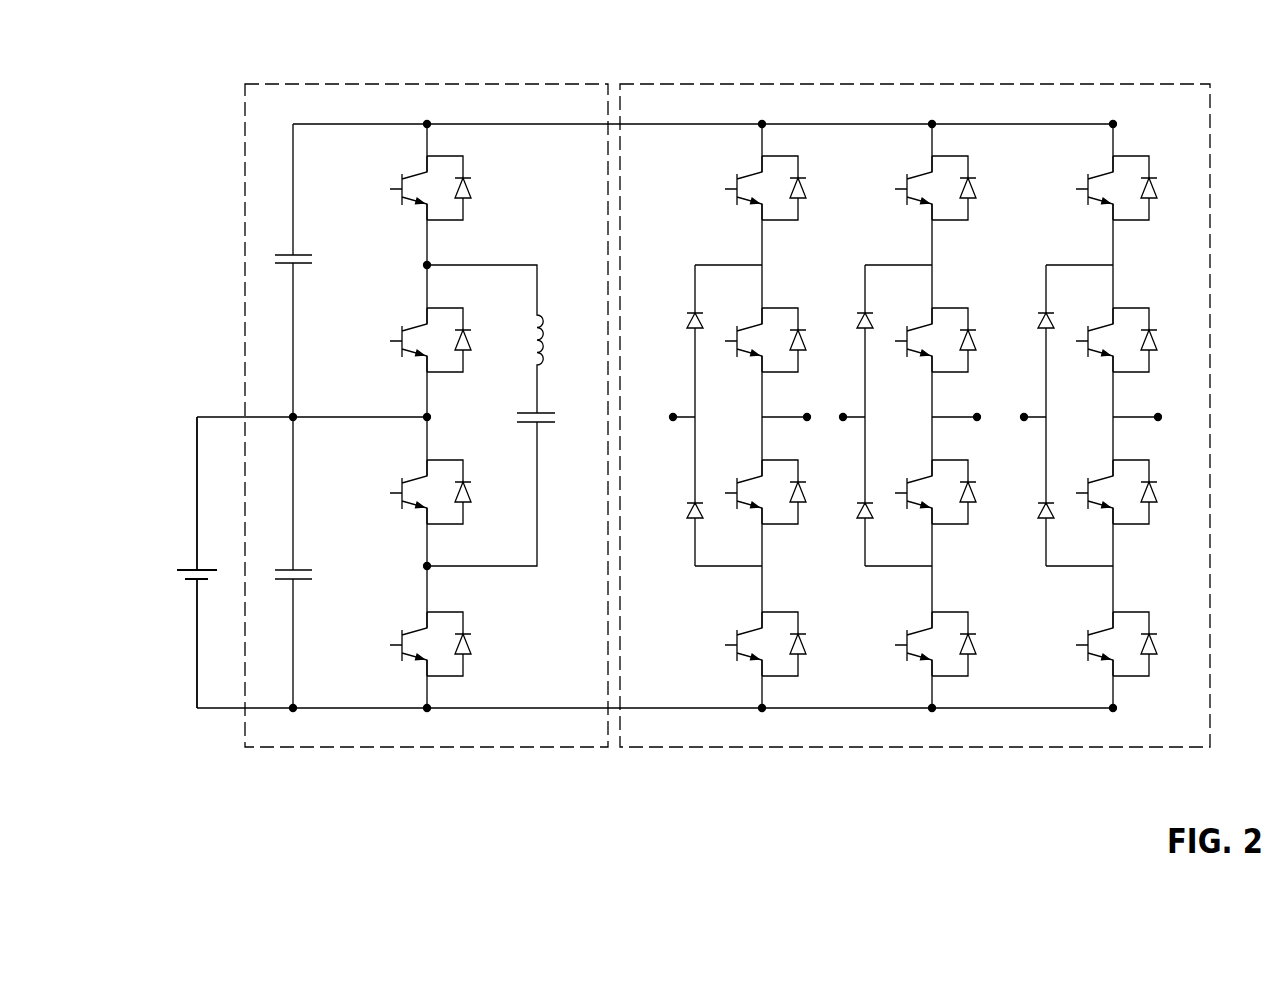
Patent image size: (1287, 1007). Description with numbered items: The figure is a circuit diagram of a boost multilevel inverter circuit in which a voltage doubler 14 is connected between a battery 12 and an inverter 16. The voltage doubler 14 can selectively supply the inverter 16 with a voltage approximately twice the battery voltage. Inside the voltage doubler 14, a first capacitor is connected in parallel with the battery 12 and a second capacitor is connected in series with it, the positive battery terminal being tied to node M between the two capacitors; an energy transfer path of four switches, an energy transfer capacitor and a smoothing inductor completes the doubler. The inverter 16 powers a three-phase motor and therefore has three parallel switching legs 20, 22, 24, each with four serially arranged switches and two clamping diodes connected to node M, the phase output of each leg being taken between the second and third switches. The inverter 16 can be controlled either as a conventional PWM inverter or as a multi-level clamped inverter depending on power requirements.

The battery 12 is at (188, 570).
The voltage doubler 14 is at (550, 84).
The inverter 16 is at (817, 84).
The switching leg 20 is at (760, 128).
The switching leg 22 is at (933, 128).
The switching leg 24 is at (1113, 128).